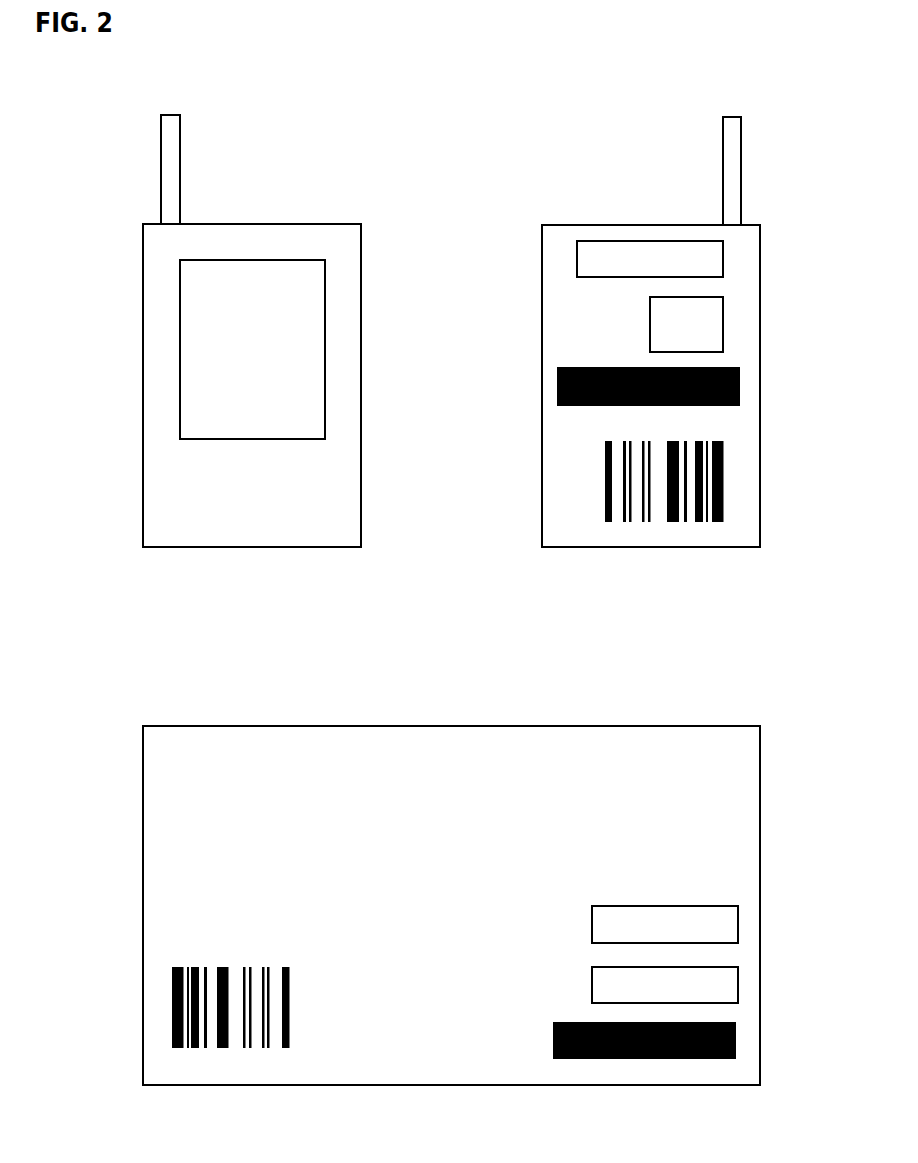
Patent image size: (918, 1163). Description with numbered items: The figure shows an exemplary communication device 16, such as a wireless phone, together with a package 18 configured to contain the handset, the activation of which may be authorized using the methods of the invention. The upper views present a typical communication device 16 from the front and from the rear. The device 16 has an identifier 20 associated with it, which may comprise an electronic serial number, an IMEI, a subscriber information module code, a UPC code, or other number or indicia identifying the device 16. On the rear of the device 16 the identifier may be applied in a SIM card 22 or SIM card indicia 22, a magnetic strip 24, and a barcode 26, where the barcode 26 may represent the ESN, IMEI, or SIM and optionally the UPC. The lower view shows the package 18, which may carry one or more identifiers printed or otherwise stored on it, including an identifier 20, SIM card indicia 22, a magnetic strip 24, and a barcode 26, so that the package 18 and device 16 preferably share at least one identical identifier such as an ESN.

The communication device 16 is at (143, 258).
The package 18 is at (450, 726).
The identifier 20 is at (723, 260).
The SIM card 22 is at (723, 322).
The magnetic strip 24 is at (740, 387).
The barcode 26 is at (723, 497).